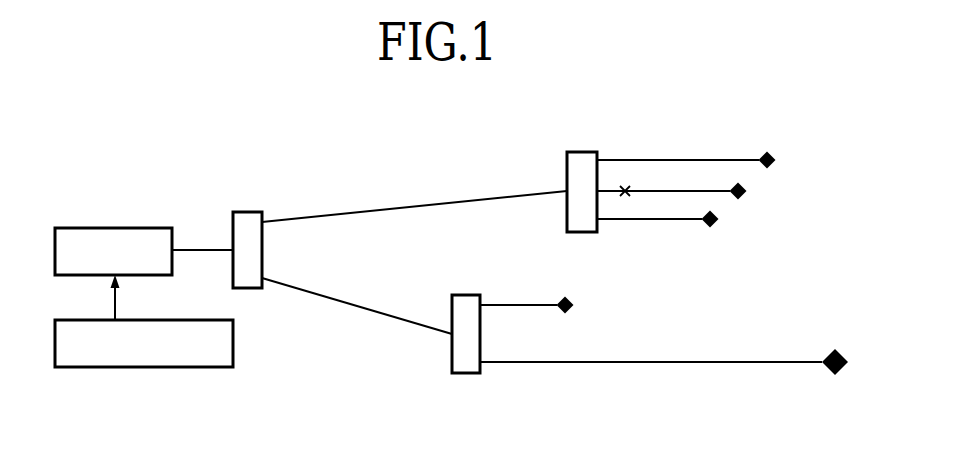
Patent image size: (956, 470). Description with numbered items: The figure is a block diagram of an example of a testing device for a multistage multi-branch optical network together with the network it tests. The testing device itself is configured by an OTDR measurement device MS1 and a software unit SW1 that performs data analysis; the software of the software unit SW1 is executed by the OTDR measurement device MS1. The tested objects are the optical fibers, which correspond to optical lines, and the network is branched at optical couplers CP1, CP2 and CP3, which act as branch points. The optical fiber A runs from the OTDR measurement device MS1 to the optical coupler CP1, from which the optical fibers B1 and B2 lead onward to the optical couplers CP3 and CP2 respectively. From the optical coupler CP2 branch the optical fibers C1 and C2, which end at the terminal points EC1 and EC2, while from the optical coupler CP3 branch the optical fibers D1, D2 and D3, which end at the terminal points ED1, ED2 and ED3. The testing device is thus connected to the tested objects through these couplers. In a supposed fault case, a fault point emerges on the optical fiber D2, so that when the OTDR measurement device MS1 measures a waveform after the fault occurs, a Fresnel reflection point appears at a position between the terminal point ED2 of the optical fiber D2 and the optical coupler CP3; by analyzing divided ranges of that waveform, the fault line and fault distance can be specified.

The OTDR measurement device MS1 is at (98, 228).
The software unit SW1 is at (233, 352).
The optical fiber A is at (202, 232).
The optical coupler CP1 is at (248, 228).
The optical coupler CP2 is at (465, 352).
The optical coupler CP3 is at (578, 173).
The optical fiber B1 is at (414, 196).
The optical fiber B2 is at (357, 311).
The optical fiber C1 is at (518, 288).
The optical fiber C2 is at (651, 344).
The optical fiber D1 is at (649, 203).
The optical fiber D2 is at (663, 177).
The optical fiber D3 is at (678, 147).
The terminal point ED1 is at (733, 222).
The terminal point ED2 is at (765, 190).
The terminal point ED3 is at (792, 158).
The terminal point EC1 is at (590, 295).
The terminal point EC2 is at (834, 379).